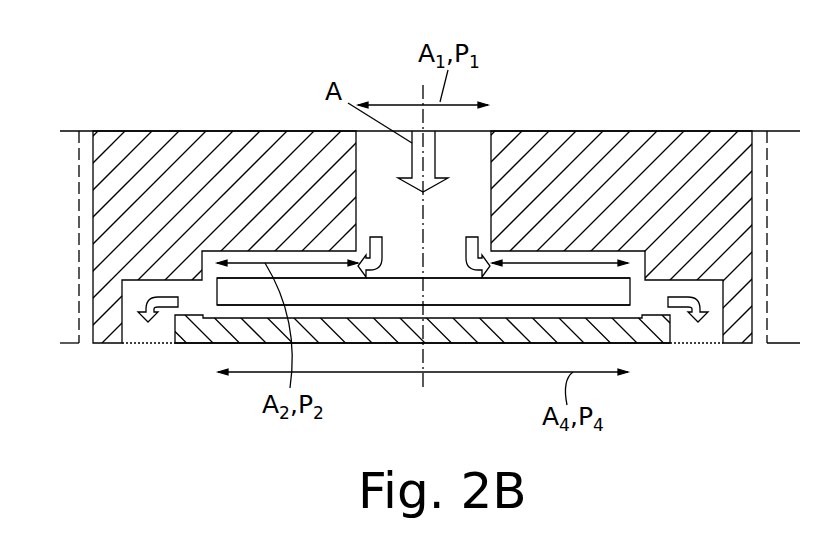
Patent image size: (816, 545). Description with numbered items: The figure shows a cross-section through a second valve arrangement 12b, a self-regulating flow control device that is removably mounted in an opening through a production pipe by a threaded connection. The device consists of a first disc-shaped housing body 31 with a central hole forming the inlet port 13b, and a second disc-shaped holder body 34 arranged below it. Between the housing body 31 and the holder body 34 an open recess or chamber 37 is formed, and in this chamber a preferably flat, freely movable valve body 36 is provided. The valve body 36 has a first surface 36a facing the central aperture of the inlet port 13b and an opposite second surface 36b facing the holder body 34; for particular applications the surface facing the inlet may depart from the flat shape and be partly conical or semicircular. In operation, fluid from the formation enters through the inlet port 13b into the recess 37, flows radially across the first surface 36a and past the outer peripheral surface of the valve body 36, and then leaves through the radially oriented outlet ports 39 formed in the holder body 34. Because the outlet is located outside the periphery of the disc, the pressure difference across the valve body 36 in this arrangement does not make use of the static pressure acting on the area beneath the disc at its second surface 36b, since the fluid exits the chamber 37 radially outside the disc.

The valve arrangement 12b is at (210, 92).
The first disc-shaped housing body 31 is at (243, 163).
The inlet port 13b is at (465, 163).
The valve body 36 is at (535, 292).
The first surface of valve body 36a is at (597, 278).
The second surface of valve body 36b is at (475, 305).
The second disc-shaped holder body 34 is at (382, 335).
The recess 37 is at (605, 312).
The outlet port 39 is at (152, 335).